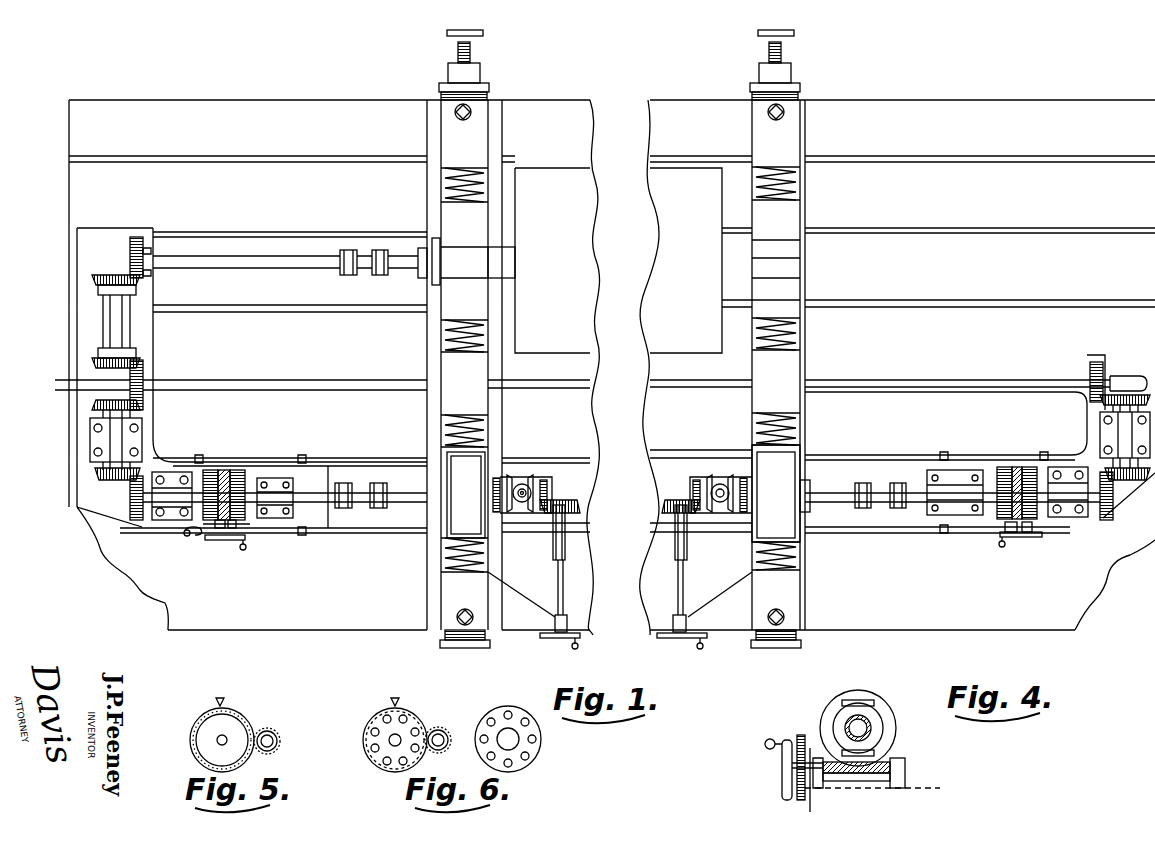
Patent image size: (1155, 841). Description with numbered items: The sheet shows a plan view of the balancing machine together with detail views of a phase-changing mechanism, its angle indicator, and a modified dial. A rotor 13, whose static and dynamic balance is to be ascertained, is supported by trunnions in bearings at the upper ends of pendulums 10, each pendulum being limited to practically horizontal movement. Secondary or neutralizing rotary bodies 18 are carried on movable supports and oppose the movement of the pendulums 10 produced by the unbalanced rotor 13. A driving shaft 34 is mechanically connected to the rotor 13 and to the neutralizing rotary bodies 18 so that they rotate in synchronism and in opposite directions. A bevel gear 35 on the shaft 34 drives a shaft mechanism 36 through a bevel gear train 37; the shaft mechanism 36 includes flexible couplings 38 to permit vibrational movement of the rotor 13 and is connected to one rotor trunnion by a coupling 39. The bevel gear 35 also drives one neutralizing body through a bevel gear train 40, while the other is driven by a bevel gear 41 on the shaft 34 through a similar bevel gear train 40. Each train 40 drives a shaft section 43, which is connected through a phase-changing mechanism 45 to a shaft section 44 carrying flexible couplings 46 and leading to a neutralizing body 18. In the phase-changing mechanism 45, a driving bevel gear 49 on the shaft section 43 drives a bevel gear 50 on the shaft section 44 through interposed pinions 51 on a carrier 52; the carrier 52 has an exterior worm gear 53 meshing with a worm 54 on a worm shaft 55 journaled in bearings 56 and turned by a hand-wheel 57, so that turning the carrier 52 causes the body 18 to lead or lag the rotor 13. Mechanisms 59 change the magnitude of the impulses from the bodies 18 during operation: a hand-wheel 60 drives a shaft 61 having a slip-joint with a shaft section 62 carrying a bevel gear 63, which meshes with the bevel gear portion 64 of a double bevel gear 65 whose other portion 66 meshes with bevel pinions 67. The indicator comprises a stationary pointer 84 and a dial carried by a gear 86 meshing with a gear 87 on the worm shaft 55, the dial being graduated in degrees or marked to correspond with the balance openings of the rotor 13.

In FIG. 1, the pendulum 10 is at (455, 215).
In FIG. 4, the pendulum 10 is at (794, 214).
In FIG. 4, the rotor 13 is at (677, 348).
In FIG. 1, the secondary or neutralizing rotary body 18 is at (454, 502).
In FIG. 4, the secondary or neutralizing rotary body 18 is at (766, 502).
In FIG. 1, the driving shaft 34 is at (322, 368).
In FIG. 4, the driving shaft 34 is at (1045, 380).
In FIG. 1, the bevel gear 35 is at (145, 372).
In FIG. 1, the shaft mechanism 36 is at (220, 262).
In FIG. 1, the bevel gear train 37 is at (95, 320).
In FIG. 1, the flexible coupling 38 is at (342, 277).
In FIG. 1, the coupling 39 is at (430, 240).
In FIG. 1, the bevel gear train 40 is at (109, 496).
In FIG. 4, the bevel gear train 40 is at (1121, 496).
In FIG. 4, the bevel gear 41 is at (1105, 368).
In FIG. 1, the shaft section 43 is at (162, 520).
In FIG. 4, the shaft section 43 is at (1075, 518).
In FIG. 1, the shaft section 44 is at (318, 510).
In FIG. 4, the shaft section 44 is at (912, 512).
In FIG. 1, the phase-changing mechanism 45 is at (237, 570).
In FIG. 4, the phase-changing mechanism 45 is at (1011, 562).
In FIG. 1, the flexible coupling 46 is at (378, 483).
In FIG. 4, the flexible coupling 46 is at (864, 510).
In FIG. 1, the driving bevel gear 49 is at (188, 536).
In FIG. 1, the bevel gear 50 is at (255, 478).
In FIG. 1, the pinion 51 is at (229, 470).
In FIG. 1, the carrier 52 is at (240, 524).
In FIG. 4, the carrier 52 is at (894, 722).
In FIG. 1, the worm gear 53 is at (226, 470).
In FIG. 4, the worm 54 is at (858, 773).
In FIG. 4, the worm shaft 55 is at (798, 746).
In FIG. 4, the bearing 56 is at (818, 758).
In FIG. 4, the hand-wheel 57 is at (783, 766).
In FIG. 1, the mechanism 59 is at (521, 587).
In FIG. 4, the mechanism 59 is at (703, 564).
In FIG. 1, the hand-wheel 60 is at (556, 638).
In FIG. 4, the hand-wheel 60 is at (684, 638).
In FIG. 1, the shaft 61 is at (564, 605).
In FIG. 4, the shaft 61 is at (677, 590).
In FIG. 1, the shaft section 62 is at (567, 528).
In FIG. 4, the shaft section 62 is at (676, 530).
In FIG. 1, the bevel gear 63 is at (565, 512).
In FIG. 4, the bevel gear 63 is at (676, 510).
In FIG. 1, the bevel gear portion 64 is at (550, 486).
In FIG. 4, the bevel gear portion 64 is at (692, 484).
In FIG. 1, the double bevel gear 65 is at (530, 480).
In FIG. 1, the bevel gear portion 66 is at (525, 482).
In FIG. 1, the bevel pinion 67 is at (522, 500).
In FIG. 5, the stationary pointer 84 is at (225, 700).
In FIG. 6, the stationary pointer 84 is at (399, 699).
In FIG. 5, the gear 86 is at (249, 724).
In FIG. 6, the gear 86 is at (421, 724).
In FIG. 5, the gear 87 is at (281, 740).
In FIG. 6, the gear 87 is at (450, 738).